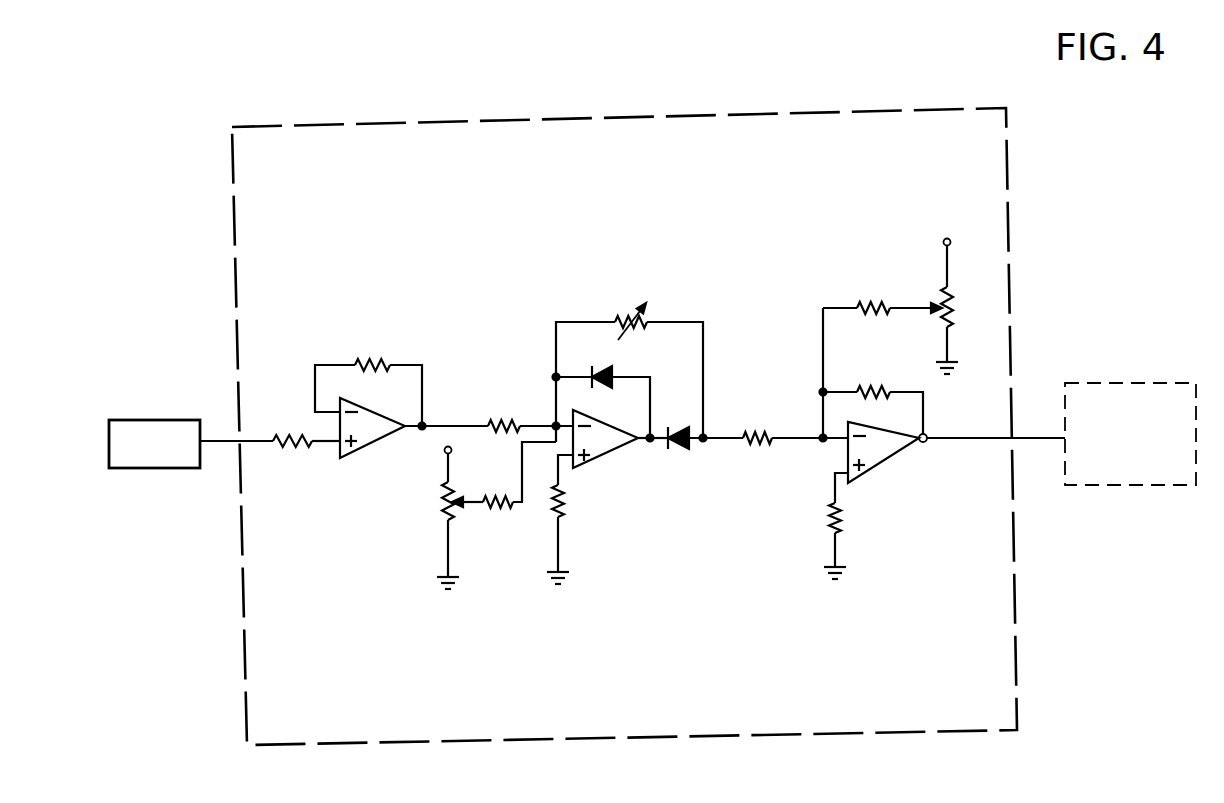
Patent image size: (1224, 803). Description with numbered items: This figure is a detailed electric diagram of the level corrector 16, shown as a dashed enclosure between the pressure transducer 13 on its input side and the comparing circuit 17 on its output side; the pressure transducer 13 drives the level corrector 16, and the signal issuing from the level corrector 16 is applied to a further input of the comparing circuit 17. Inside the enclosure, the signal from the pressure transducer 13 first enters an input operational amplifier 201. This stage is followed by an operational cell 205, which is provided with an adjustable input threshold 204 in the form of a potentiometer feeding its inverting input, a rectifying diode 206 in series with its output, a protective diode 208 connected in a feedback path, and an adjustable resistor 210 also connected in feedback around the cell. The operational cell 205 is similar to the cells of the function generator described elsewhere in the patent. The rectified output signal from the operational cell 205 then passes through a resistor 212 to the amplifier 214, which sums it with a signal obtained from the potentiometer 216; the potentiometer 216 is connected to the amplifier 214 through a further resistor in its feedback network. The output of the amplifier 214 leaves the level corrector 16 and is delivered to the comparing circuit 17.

The pressure transducer 13 is at (154, 444).
The level corrector 16 is at (567, 109).
The comparing circuit 17 is at (1128, 400).
The input operational amplifier 201 is at (370, 428).
The adjustable input threshold 204 is at (501, 512).
The operational cell 205 is at (622, 462).
The rectifying diode 206 is at (683, 450).
The protective diode 208 is at (613, 369).
The adjustable resistor 210 is at (656, 308).
The resistor 212 is at (755, 432).
The amplifier 214 is at (894, 477).
The potentiometer 216 is at (924, 277).